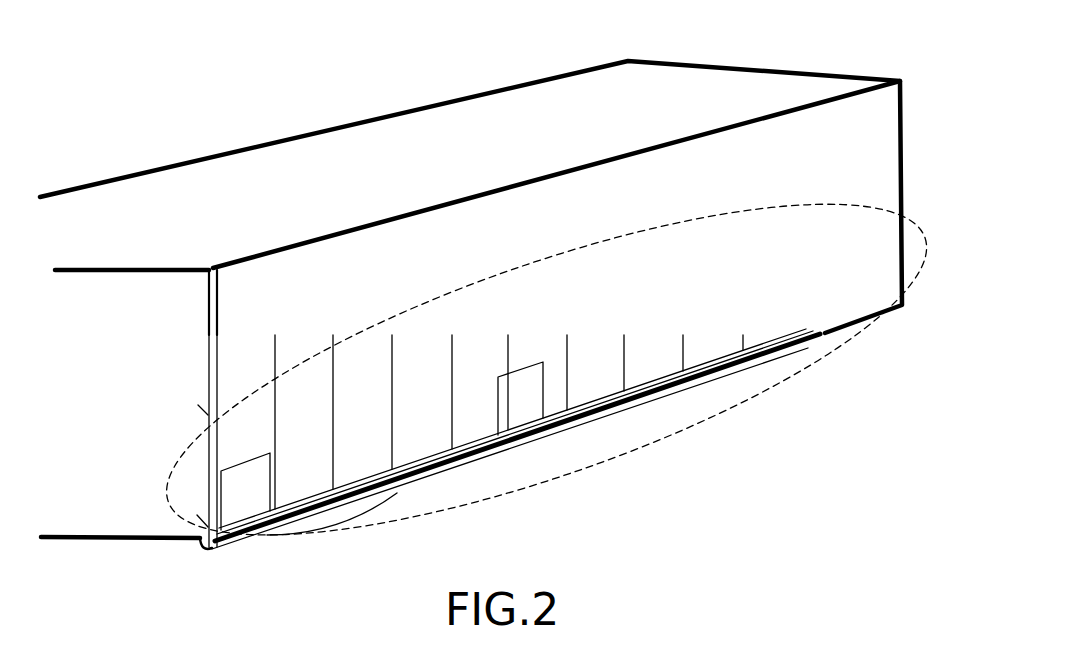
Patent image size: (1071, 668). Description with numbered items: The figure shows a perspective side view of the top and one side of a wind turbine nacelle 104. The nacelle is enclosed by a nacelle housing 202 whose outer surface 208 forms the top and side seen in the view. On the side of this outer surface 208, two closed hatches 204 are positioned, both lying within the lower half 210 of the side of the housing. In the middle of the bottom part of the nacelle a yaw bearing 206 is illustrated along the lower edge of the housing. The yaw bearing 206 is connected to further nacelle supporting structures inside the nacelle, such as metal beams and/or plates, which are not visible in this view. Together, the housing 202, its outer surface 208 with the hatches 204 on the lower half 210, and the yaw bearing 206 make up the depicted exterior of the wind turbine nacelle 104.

The wind turbine nacelle 104 is at (534, 456).
The nacelle housing 202 is at (653, 397).
The closed hatches 204 is at (270, 477).
The yaw bearing 206 is at (397, 493).
The outer surface 208 is at (727, 92).
The lower half 210 is at (782, 208).